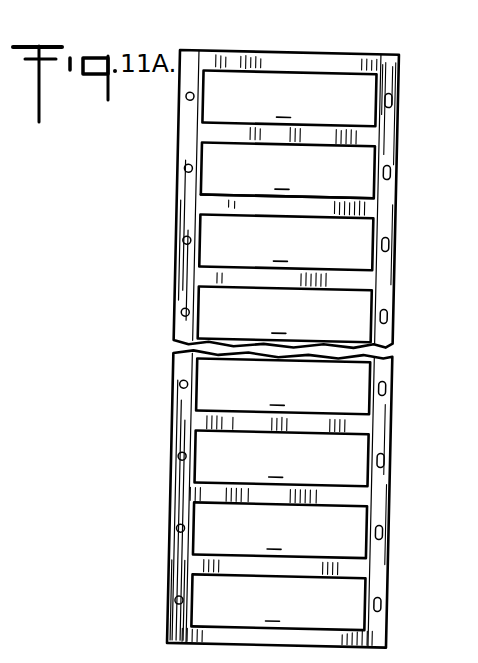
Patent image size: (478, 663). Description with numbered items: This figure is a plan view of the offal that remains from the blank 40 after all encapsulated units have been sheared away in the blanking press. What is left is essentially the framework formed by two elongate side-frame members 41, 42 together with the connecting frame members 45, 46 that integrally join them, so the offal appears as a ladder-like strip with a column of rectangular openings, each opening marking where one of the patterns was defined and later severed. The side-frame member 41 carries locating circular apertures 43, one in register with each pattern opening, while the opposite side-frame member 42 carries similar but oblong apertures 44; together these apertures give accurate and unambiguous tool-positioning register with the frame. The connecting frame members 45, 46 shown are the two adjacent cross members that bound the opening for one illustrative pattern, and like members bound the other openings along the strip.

The blank 40 is at (329, 19).
The side-frame member 41 is at (180, 325).
The side-frame member 42 is at (388, 331).
The locating circular aperture 43 is at (182, 240).
The oblong aperture 44 is at (395, 242).
The connecting frame member 45 is at (313, 199).
The connecting frame member 46 is at (319, 288).